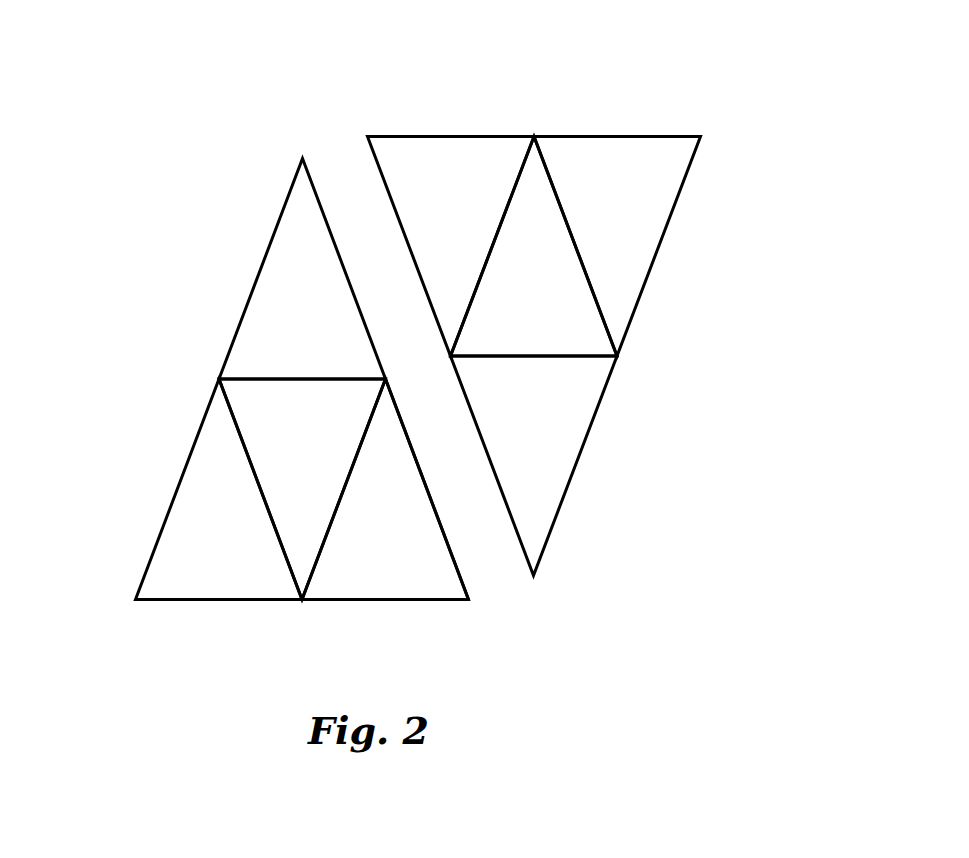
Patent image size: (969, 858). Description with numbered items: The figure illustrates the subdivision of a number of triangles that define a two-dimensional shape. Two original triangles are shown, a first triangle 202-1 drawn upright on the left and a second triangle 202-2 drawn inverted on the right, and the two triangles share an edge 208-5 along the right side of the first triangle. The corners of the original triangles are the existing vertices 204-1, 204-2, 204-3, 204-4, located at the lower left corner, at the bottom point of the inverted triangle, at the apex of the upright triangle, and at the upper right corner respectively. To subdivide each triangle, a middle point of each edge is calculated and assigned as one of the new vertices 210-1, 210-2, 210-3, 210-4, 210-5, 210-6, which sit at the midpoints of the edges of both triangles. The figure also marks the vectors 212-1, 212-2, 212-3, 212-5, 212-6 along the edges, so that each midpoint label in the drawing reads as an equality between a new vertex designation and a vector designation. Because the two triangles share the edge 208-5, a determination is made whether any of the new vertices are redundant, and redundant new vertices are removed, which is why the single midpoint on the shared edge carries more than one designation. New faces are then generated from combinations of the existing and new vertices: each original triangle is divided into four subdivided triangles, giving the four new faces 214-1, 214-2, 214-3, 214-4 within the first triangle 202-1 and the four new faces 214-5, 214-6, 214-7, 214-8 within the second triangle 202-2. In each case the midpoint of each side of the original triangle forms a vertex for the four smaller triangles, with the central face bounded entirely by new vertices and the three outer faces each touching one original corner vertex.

The triangle 202-1 is at (185, 252).
The triangle 202-2 is at (656, 484).
The vertex 204-1 is at (120, 642).
The vertex 204-2 is at (563, 642).
The vertex 204-3 is at (333, 97).
The vertex 204-4 is at (710, 96).
The shared edge 208-5 is at (460, 571).
The new vertex 210-1 is at (268, 662).
The new vertex 210-2 is at (152, 400).
The new vertex 210-3 is at (405, 303).
The new vertex 210-4 is at (662, 396).
The new vertex 210-5 is at (512, 76).
The new vertex 210-6 is at (402, 363).
The vector 212-1 is at (330, 662).
The vector 212-2 is at (426, 420).
The vector 212-3 is at (688, 342).
The vector 212-5 is at (572, 76).
The vector 212-6 is at (172, 345).
The new face 214-1 is at (231, 545).
The new face 214-2 is at (314, 435).
The new face 214-3 is at (373, 545).
The new face 214-4 is at (318, 318).
The new face 214-5 is at (548, 413).
The new face 214-6 is at (547, 297).
The new face 214-7 is at (463, 192).
The new face 214-8 is at (607, 192).